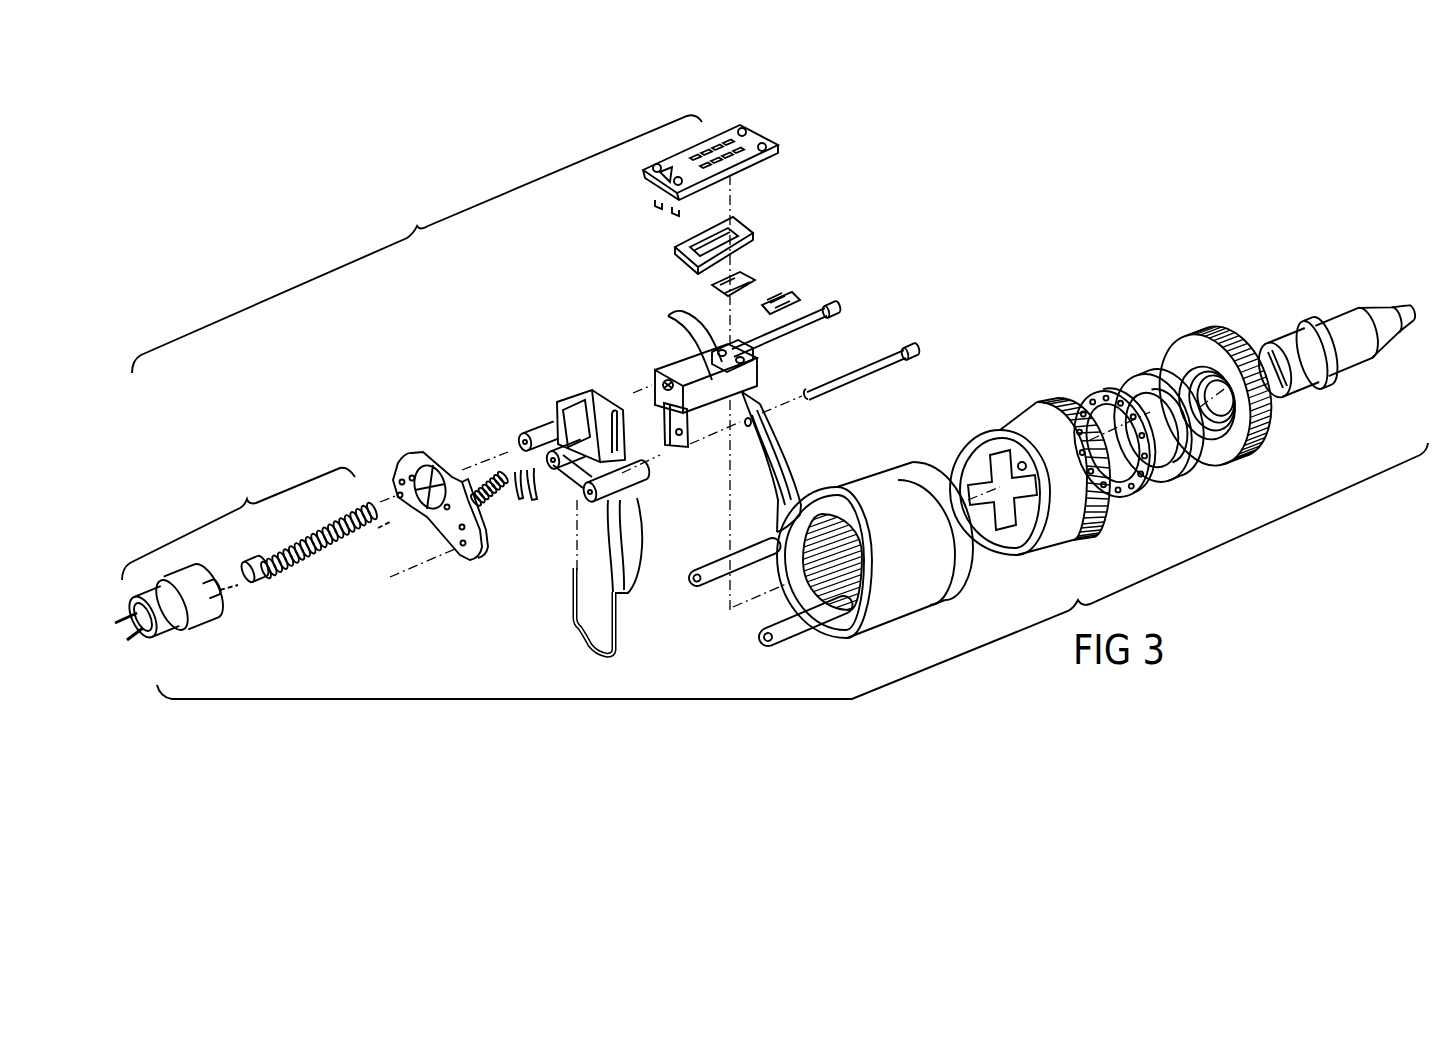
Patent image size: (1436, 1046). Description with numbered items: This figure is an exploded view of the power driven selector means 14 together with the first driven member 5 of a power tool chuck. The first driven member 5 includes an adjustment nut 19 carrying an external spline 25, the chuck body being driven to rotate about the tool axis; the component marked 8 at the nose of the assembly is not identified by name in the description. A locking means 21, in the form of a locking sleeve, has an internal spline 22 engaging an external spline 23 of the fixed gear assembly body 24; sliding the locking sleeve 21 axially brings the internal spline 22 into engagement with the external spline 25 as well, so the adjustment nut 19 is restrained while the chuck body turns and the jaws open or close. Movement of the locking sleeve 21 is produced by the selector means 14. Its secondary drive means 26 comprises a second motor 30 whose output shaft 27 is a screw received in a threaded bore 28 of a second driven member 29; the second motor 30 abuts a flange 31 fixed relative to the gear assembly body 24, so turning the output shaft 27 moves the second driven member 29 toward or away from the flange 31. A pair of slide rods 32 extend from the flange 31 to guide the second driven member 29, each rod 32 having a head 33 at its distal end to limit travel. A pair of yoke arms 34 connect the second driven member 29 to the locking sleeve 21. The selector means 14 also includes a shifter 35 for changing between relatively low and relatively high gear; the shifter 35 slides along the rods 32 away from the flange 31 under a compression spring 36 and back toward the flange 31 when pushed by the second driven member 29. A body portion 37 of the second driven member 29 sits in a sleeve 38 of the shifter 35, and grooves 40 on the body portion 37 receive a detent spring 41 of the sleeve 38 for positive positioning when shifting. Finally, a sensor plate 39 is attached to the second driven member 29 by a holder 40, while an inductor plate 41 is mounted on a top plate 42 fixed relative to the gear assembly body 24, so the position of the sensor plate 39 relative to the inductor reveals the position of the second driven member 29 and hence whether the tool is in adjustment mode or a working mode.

The first driven member 5 is at (1125, 304).
The nose piece 8 is at (1358, 386).
The power driven selector means 14 is at (417, 244).
The adjustment nut 19 is at (1210, 330).
The locking sleeve 21 is at (928, 590).
The internal spline 22 is at (830, 592).
The external spline 23 is at (1037, 402).
The fixed body 24 is at (1100, 546).
The external spline 25 is at (1234, 338).
The secondary drive means 26 is at (238, 524).
The output shaft 27 is at (311, 552).
The threaded bore 28 is at (660, 386).
The second driven member 29 is at (665, 376).
The second motor 30 is at (200, 602).
The flange 31 is at (490, 550).
The slide rods 32 is at (866, 348).
The head 33 is at (836, 300).
The yoke arms 34 is at (680, 420).
The shifter 35 is at (519, 415).
The compression spring 36 is at (488, 488).
The body portion 37 is at (705, 390).
The sleeve 38 is at (590, 400).
The sensor plate 39 is at (745, 280).
The grooves 40 is at (780, 303).
The detent spring 41 is at (740, 228).
The top plate 42 is at (750, 133).